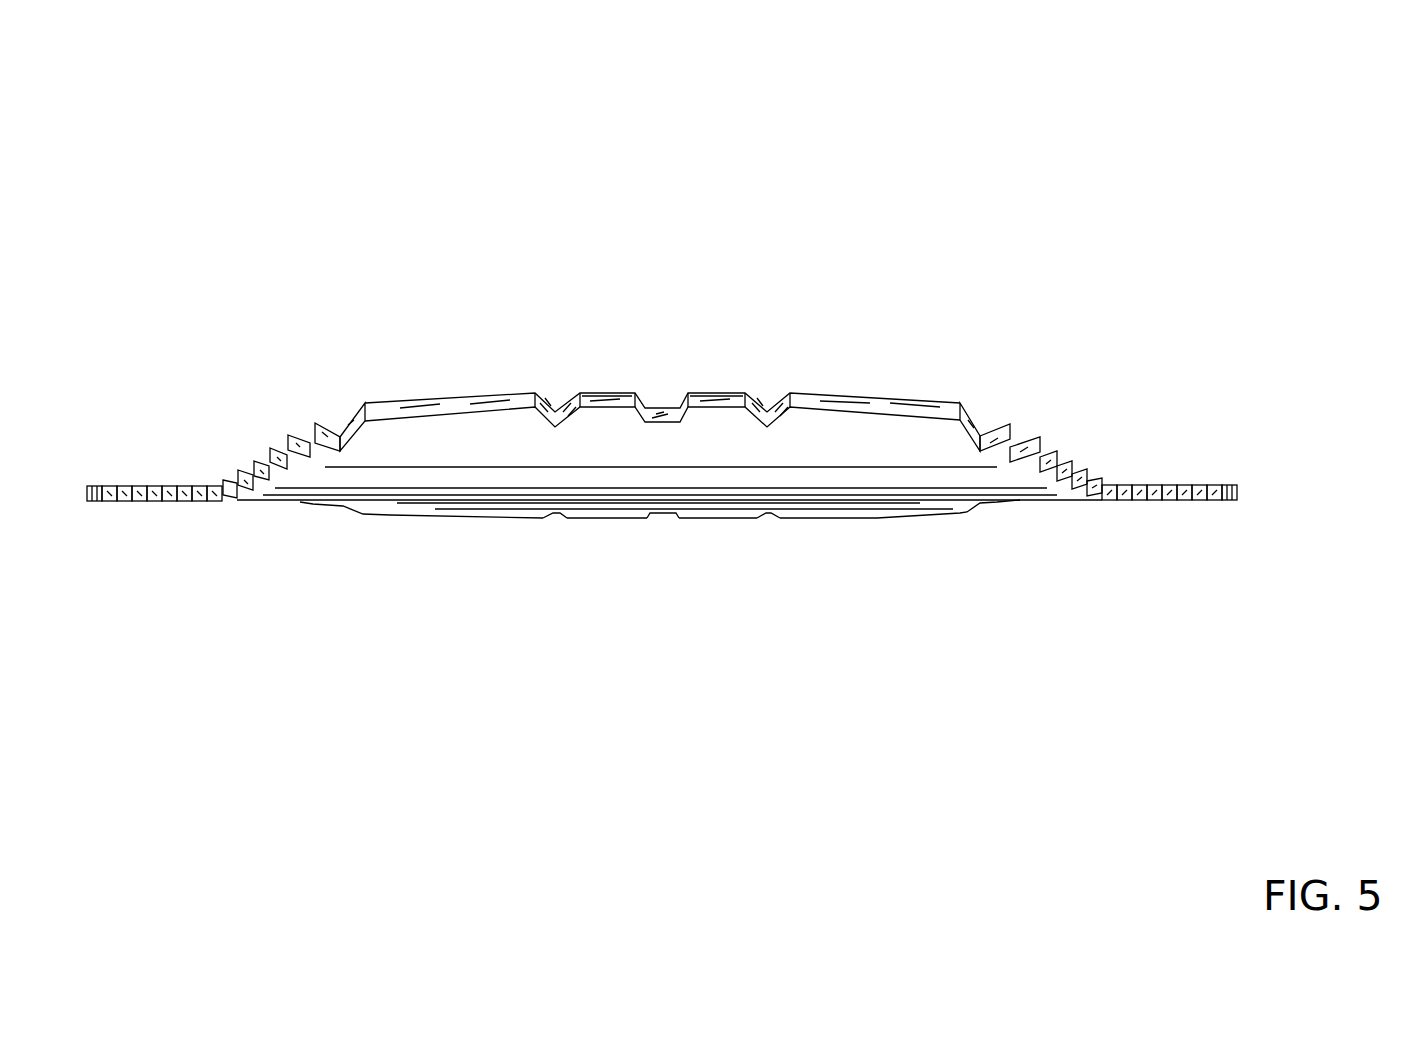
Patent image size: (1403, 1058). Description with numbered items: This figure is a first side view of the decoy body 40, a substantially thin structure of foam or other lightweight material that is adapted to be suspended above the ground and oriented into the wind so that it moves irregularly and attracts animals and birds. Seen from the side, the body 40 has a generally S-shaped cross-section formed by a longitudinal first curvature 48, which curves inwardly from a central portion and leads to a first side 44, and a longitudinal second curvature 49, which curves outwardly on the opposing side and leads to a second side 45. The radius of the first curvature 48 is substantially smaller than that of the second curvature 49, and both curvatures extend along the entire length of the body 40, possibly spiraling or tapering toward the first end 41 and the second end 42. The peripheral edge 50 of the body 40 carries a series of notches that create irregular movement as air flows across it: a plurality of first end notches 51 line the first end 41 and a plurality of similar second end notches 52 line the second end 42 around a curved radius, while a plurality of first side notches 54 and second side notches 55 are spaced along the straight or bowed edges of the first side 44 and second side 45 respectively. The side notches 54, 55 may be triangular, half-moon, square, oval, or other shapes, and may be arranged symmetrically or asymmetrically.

The decoy body 40 is at (312, 187).
The first end 41 is at (1138, 490).
The second end 42 is at (177, 490).
The first side 44 is at (597, 400).
The second side 45 is at (610, 518).
The first curvature 48 is at (713, 428).
The second curvature 49 is at (728, 510).
The peripheral edge 50 is at (880, 523).
The first end notches 51 is at (1190, 490).
The second end notches 52 is at (150, 490).
The first side notches 54 is at (542, 402).
The second side notches 55 is at (543, 518).